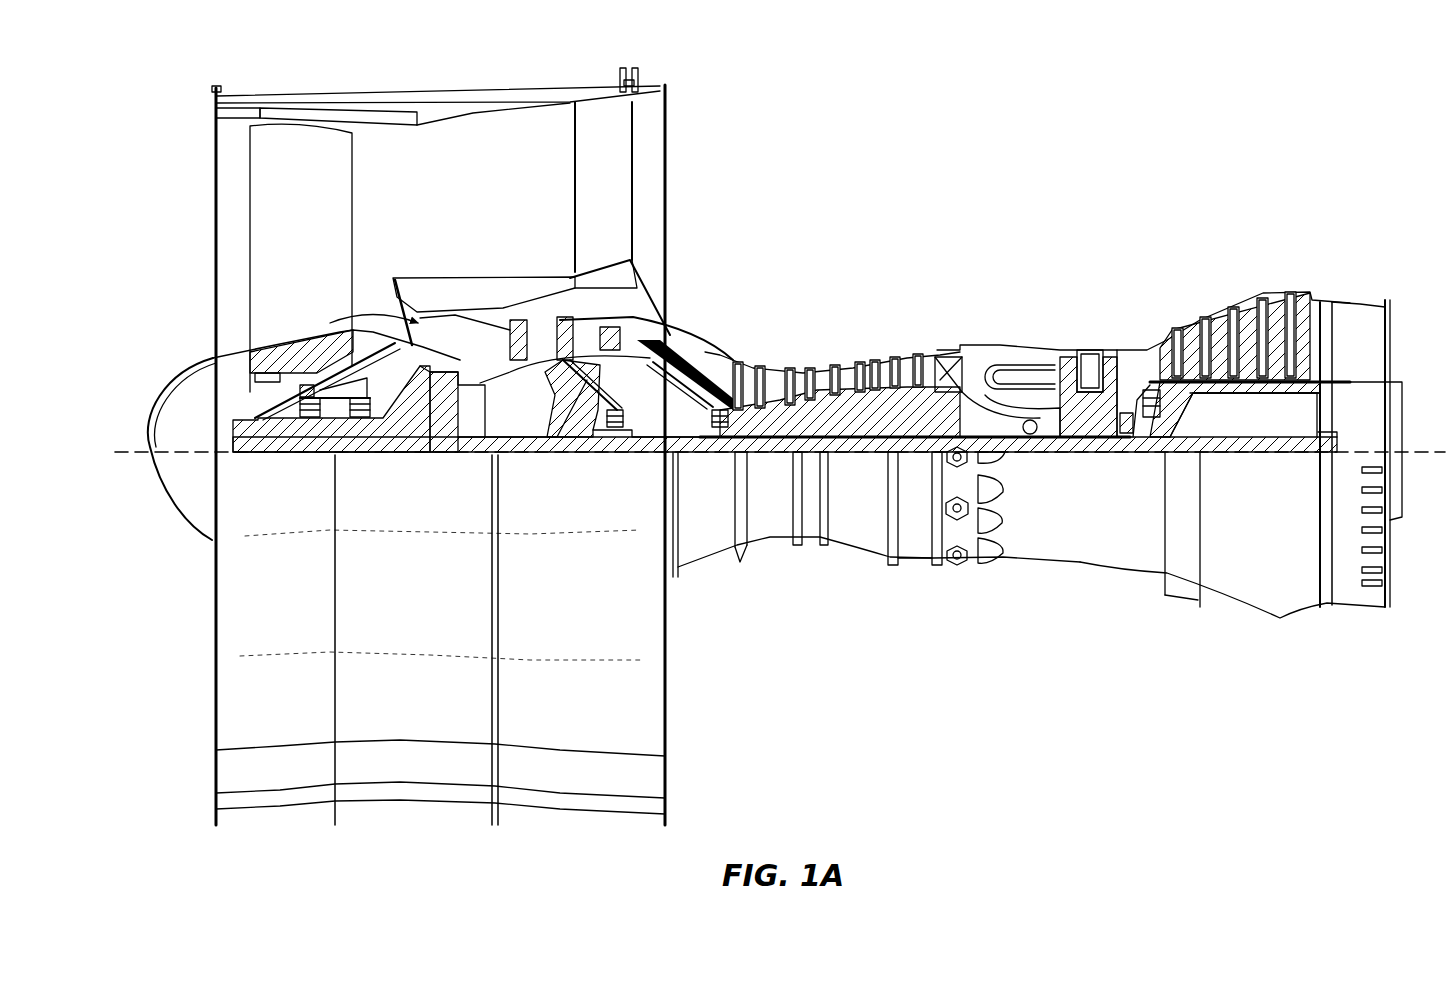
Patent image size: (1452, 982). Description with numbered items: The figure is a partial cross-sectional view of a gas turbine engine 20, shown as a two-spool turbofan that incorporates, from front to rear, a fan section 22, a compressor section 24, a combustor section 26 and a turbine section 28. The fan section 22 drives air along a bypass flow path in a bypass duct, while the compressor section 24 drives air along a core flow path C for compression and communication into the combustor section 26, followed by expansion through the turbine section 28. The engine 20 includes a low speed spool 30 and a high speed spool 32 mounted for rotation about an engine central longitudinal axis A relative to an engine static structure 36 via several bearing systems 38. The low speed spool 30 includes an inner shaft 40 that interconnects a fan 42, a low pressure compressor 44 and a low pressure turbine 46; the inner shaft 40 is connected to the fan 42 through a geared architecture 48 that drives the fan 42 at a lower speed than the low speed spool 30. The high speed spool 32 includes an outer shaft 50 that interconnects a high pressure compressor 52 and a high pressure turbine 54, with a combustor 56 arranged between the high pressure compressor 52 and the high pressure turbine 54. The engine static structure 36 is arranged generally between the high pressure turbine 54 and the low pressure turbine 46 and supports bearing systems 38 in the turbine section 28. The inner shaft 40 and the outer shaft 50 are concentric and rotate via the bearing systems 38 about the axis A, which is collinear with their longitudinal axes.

The gas turbine engine 20 is at (1270, 105).
The fan section 22 is at (320, 92).
The compressor section 24 is at (832, 310).
The combustor section 26 is at (1029, 301).
The turbine section 28 is at (1233, 301).
The low speed spool 30 is at (877, 457).
The high speed spool 32 is at (925, 410).
The engine static structure 36 is at (918, 567).
The bearing systems 38 is at (312, 410).
The inner shaft 40 is at (690, 455).
The fan 42 is at (310, 237).
The low pressure compressor 44 is at (585, 330).
The low pressure turbine 46 is at (1245, 322).
The geared architecture 48 is at (450, 430).
The outer shaft 50 is at (1036, 442).
The high pressure compressor 52 is at (827, 415).
The high pressure turbine 54 is at (1085, 342).
The combustor 56 is at (1013, 370).
The engine central longitudinal axis A is at (1420, 445).
The core flow path C is at (345, 320).